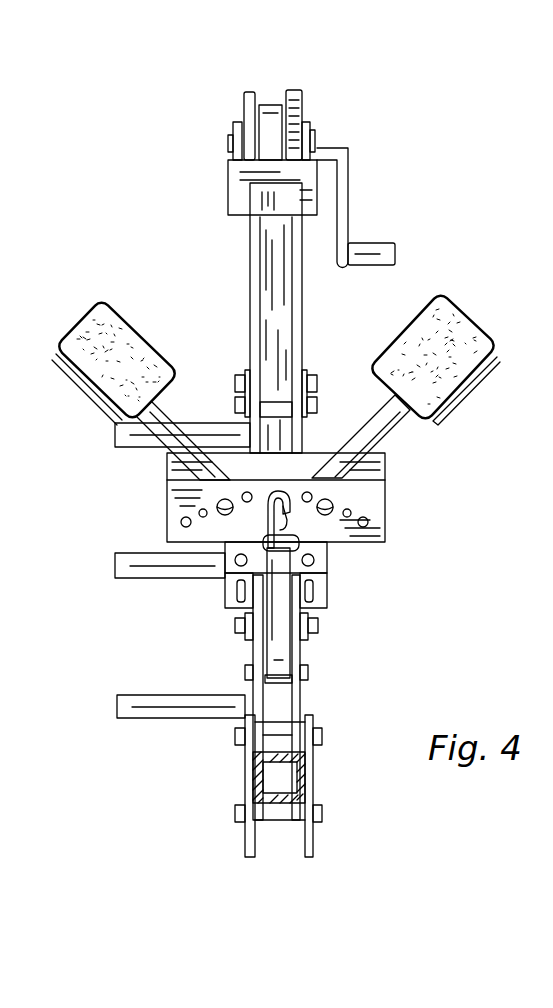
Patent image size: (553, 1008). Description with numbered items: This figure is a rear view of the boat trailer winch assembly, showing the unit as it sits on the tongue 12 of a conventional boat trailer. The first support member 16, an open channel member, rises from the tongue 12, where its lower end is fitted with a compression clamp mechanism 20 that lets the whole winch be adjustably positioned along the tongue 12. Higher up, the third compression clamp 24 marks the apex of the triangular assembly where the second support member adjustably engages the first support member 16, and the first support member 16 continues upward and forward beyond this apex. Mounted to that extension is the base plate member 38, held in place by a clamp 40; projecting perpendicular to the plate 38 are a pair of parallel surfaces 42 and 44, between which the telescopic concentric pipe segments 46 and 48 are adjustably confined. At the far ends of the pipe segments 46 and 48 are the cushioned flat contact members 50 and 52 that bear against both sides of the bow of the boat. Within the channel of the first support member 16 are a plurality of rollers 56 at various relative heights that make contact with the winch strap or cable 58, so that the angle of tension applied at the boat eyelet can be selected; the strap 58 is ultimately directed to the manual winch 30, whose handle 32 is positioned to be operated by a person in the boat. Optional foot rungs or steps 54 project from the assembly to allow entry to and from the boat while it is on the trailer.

The tongue 12 is at (263, 773).
The first support member 16 is at (300, 703).
The compression clamp mechanism 20 is at (312, 775).
The third compression clamp 24 is at (307, 370).
The manual winch 30 is at (300, 108).
The handle 32 is at (348, 217).
The base plate member 38 is at (318, 552).
The clamp 40 is at (327, 610).
The parallel surface 42 is at (167, 468).
The parallel surface 44 is at (180, 517).
The telescopic concentric pipe segment 46 is at (168, 423).
The telescopic concentric pipe segment 48 is at (388, 425).
The cushioned flat contact member 50 is at (95, 315).
The cushioned flat contact member 52 is at (462, 325).
The foot rungs or steps 54 is at (125, 435).
The rollers 56 is at (265, 680).
The winch strap or cable 58 is at (277, 650).